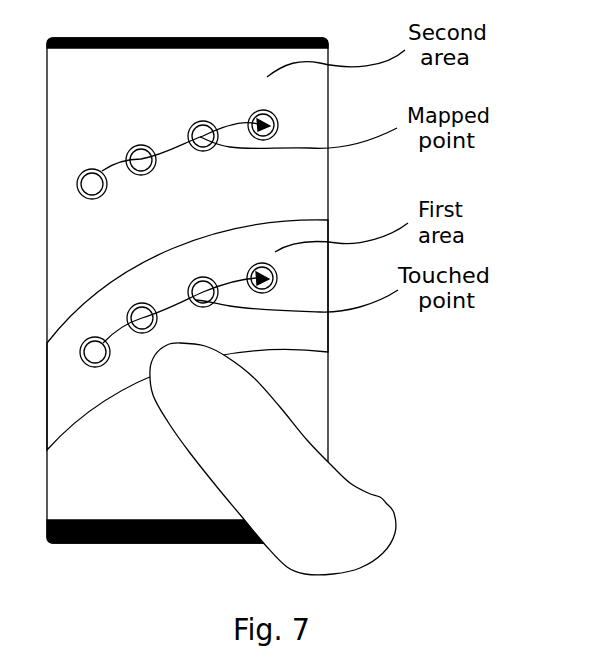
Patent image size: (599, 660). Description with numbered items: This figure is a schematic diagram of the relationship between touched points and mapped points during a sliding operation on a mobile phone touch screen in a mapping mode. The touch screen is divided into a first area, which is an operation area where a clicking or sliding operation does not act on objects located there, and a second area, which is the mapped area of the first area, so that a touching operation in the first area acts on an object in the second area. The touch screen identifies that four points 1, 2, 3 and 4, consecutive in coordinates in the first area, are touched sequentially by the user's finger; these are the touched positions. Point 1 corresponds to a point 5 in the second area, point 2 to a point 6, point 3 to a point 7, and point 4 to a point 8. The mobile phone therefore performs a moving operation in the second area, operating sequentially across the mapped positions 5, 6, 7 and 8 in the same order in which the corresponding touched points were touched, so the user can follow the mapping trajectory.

The point 1 is at (95, 352).
The point 2 is at (142, 318).
The point 3 is at (203, 292).
The point 4 is at (262, 278).
The point 5 is at (92, 184).
The point 6 is at (141, 160).
The point 7 is at (203, 136).
The point 8 is at (263, 125).